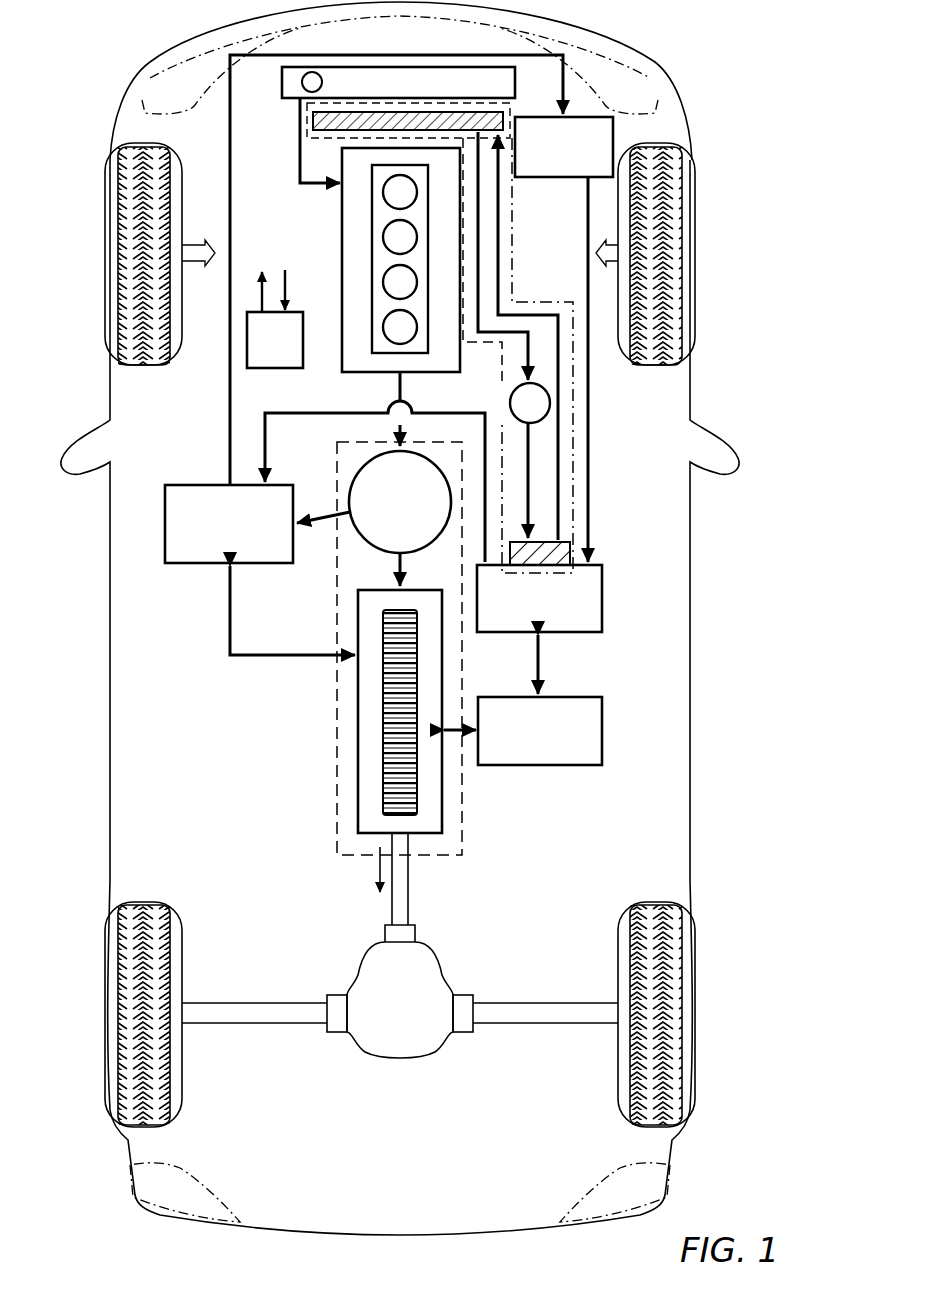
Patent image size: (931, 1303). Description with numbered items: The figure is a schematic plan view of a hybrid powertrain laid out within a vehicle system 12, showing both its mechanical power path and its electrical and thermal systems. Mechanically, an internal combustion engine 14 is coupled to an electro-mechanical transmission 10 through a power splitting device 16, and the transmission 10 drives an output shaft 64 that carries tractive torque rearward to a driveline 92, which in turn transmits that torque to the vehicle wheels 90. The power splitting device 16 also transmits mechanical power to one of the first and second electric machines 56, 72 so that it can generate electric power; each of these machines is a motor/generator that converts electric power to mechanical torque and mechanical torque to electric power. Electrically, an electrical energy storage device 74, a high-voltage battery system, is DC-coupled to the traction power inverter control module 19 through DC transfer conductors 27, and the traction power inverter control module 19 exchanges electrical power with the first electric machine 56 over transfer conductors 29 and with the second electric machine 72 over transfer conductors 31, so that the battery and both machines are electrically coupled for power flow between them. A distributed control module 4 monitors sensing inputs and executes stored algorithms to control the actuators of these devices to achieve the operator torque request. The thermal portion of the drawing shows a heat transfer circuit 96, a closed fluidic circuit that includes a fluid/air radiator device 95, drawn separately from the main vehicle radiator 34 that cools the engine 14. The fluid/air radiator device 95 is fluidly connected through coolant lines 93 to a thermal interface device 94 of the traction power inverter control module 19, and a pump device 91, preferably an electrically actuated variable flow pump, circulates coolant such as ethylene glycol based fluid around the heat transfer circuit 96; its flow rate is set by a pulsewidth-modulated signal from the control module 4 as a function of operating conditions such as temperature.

The vehicle system 12 is at (126, 116).
The main vehicle radiator 34 is at (285, 82).
The fluid/air radiator device 95 is at (318, 120).
The electrical energy storage device 74 is at (600, 126).
The coolant lines 93 is at (479, 230).
The internal combustion engine 14 is at (350, 255).
The distributed control module 4 is at (296, 322).
The pump device 91 is at (508, 400).
The DC transfer conductors 27 is at (590, 360).
The heat transfer circuit 96 is at (578, 447).
The second electric machine 72 is at (188, 483).
The transfer conductors 31 is at (268, 470).
The thermal interface device 94 is at (540, 540).
The traction power inverter control module 19 is at (604, 574).
The power splitting device 16 is at (368, 540).
The transfer conductors 29 is at (545, 665).
The first electric machine 56 is at (597, 757).
The electro-mechanical transmission 10 is at (335, 805).
The output shaft 64 is at (403, 905).
The driveline 92 is at (397, 1045).
The vehicle wheels 90 is at (175, 1083).